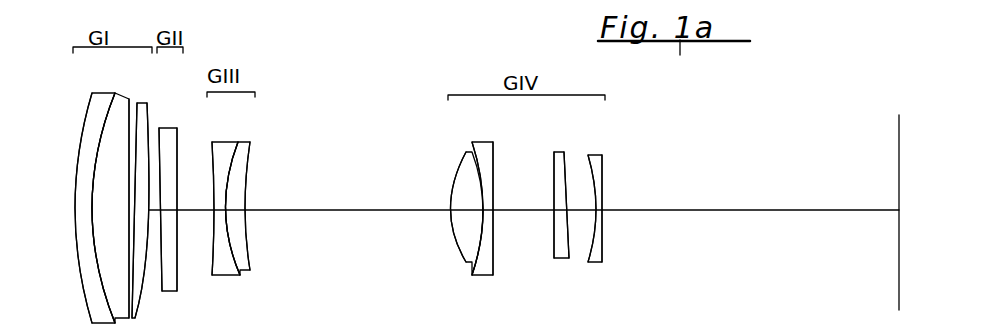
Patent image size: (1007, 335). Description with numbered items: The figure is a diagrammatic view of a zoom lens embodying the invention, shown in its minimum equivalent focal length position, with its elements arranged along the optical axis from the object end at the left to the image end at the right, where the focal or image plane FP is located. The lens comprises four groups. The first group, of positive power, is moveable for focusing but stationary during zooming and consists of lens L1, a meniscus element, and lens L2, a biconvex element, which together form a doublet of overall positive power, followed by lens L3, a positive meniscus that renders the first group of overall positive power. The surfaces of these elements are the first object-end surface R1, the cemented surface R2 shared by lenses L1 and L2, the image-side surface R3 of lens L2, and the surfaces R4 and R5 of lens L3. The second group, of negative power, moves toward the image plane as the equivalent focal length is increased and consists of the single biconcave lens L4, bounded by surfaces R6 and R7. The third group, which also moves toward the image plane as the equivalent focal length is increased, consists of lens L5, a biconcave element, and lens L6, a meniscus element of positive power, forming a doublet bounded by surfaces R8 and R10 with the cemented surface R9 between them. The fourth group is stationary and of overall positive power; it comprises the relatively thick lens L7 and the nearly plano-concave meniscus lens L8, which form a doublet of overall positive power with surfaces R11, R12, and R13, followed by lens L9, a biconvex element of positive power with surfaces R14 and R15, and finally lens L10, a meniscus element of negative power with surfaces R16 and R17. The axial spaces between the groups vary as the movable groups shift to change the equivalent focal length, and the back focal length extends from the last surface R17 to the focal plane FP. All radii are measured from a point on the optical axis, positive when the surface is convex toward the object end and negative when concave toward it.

The meniscus lens element L1 is at (97, 305).
The biconvex lens element L2 is at (108, 277).
The positive meniscus lens element L3 is at (146, 297).
The biconcave lens element L4 is at (176, 268).
The biconcave lens element L5 is at (228, 276).
The positive meniscus lens element L6 is at (243, 257).
The thick biconcave lens element L7 is at (466, 257).
The nearly plano-concave meniscus lens element L8 is at (483, 255).
The biconvex lens element L9 is at (557, 258).
The negative meniscus lens element L10 is at (601, 250).
The first object-end lens surface R1 is at (90, 122).
The cemented surface between L1 and L2 R2 is at (108, 101).
The image-side surface of L2 R3 is at (129, 99).
The object-side surface of L3 R4 is at (137, 103).
The image-side surface of L3 R5 is at (148, 105).
The object-side surface of L4 R6 is at (159, 128).
The image-side surface of L4 R7 is at (177, 152).
The object-side surface of L5 R8 is at (212, 178).
The cemented surface between L5 and L6 R9 is at (237, 142).
The image-side surface of L6 R10 is at (250, 152).
The object-side surface of L7 R11 is at (460, 168).
The cemented surface between L7 and L8 R12 is at (476, 150).
The image-side surface of L8 R13 is at (494, 158).
The object-side surface of L9 R14 is at (554, 170).
The image-side surface of L9 R15 is at (568, 156).
The object-side surface of L10 R16 is at (597, 162).
The last image-end lens surface R17 is at (603, 170).
The focal plane FP is at (899, 152).